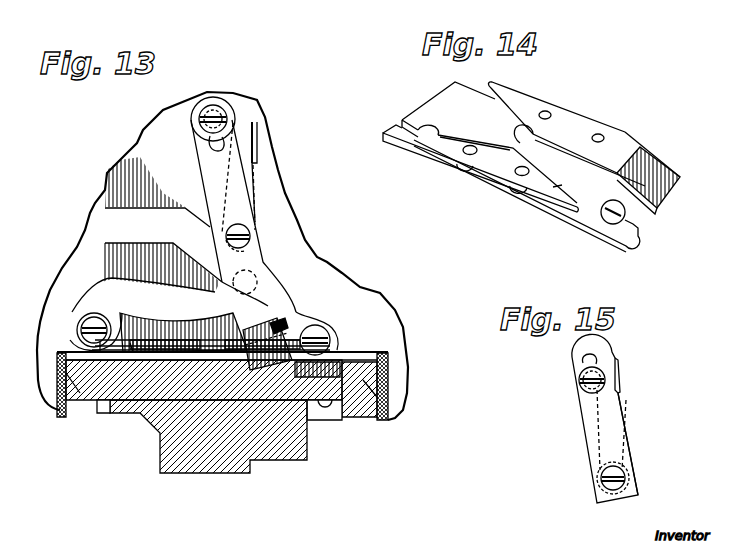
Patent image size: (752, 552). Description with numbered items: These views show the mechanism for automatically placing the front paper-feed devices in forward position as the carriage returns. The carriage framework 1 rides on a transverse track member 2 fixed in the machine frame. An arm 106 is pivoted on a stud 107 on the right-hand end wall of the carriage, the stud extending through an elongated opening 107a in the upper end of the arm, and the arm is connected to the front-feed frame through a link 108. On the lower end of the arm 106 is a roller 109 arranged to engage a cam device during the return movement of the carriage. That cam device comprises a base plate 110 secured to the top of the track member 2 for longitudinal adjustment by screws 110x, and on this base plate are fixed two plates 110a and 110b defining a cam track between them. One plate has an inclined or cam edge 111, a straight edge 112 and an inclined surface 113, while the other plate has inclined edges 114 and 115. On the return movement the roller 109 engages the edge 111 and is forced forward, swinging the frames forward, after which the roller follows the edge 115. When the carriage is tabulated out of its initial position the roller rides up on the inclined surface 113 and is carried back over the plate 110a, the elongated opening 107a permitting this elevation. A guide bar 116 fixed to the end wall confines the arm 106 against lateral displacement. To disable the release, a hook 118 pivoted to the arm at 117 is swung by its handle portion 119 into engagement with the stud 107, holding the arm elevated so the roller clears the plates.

In FIG. 13, the carriage framework 1 is at (330, 266).
In FIG. 13, the track member 2 is at (330, 392).
In FIG. 13, the arm 106 is at (208, 197).
In FIG. 15, the arm 106 is at (585, 422).
In FIG. 15, the stud 107 is at (583, 393).
In FIG. 13, the elongated opening 107a is at (211, 141).
In FIG. 15, the elongated opening 107a is at (610, 358).
In FIG. 13, the link 108 is at (122, 224).
In FIG. 13, the roller 109 is at (280, 336).
In FIG. 13, the base plate 110 is at (125, 402).
In FIG. 14, the base plate 110 is at (430, 105).
In FIG. 14, the plate 110a is at (573, 123).
In FIG. 14, the plate 110b is at (500, 170).
In FIG. 14, the screws 110x is at (427, 130).
In FIG. 14, the inclined or cam edge 111 is at (527, 124).
In FIG. 14, the straight edge 112 is at (582, 168).
In FIG. 13, the inclined surface 113 is at (221, 347).
In FIG. 14, the inclined surface 113 is at (660, 157).
In FIG. 14, the inclined edge 114 is at (488, 143).
In FIG. 13, the inclined edge 115 is at (123, 393).
In FIG. 14, the inclined edge 115 is at (562, 186).
In FIG. 13, the guide bar 116 is at (107, 293).
In FIG. 13, the pivot 117 is at (250, 248).
In FIG. 15, the pivot 117 is at (600, 483).
In FIG. 13, the hook 118 is at (240, 118).
In FIG. 15, the hook 118 is at (628, 456).
In FIG. 13, the handle portion 119 is at (257, 136).
In FIG. 15, the handle portion 119 is at (617, 373).